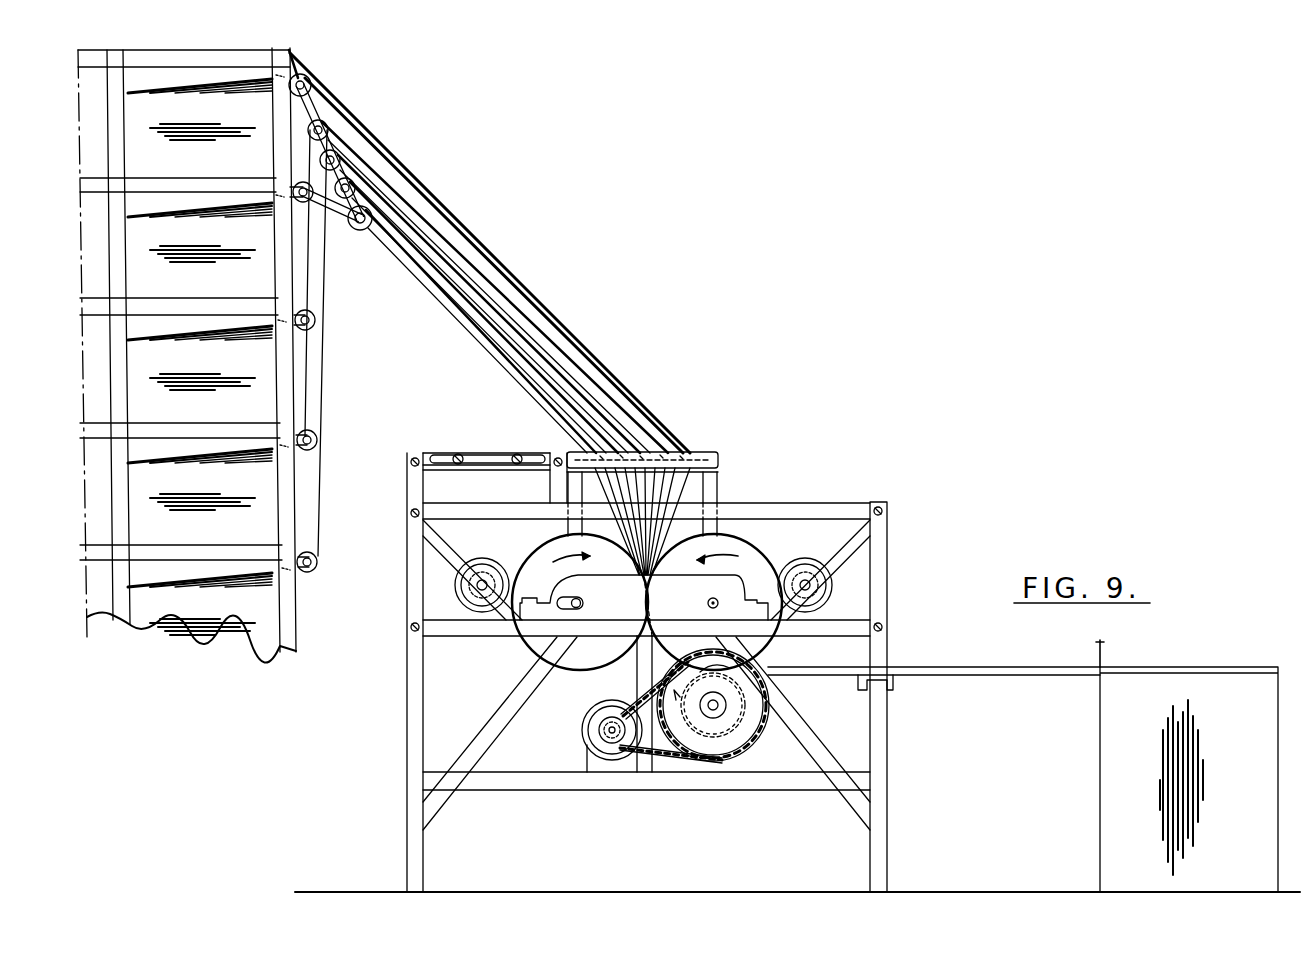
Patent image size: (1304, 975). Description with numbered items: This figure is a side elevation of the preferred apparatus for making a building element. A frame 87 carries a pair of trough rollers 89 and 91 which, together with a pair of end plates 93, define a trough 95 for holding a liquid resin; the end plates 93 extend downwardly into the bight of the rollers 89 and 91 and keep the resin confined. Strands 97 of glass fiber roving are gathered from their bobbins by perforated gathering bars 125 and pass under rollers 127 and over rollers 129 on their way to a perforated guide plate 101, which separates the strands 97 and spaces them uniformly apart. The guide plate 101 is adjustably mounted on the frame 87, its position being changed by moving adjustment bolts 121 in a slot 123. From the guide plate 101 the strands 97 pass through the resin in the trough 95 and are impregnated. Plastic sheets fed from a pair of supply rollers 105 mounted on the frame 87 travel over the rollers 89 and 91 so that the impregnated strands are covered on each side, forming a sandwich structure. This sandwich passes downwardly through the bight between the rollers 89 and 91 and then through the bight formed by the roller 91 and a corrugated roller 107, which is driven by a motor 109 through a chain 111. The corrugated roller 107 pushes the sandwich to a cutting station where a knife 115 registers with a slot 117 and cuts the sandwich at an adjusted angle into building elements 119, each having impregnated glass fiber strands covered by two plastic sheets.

The frame 87 is at (878, 730).
The trough roller 89 is at (579, 660).
The trough roller 91 is at (766, 636).
The end plates 93 is at (697, 498).
The trough 95 is at (688, 492).
The strands 97 is at (490, 238).
The guide plate 101 is at (698, 453).
The supply rollers 105 is at (456, 580).
The corrugated roller 107 is at (779, 690).
The motor 109 is at (584, 727).
The chain 111 is at (705, 757).
The knife 115 is at (1104, 656).
The slot 117 is at (1104, 678).
The building element 119 is at (1216, 667).
The adjustment bolts 121 is at (517, 454).
The slot 123 is at (486, 463).
The perforated gathering bars 125 is at (293, 343).
The rollers 127 is at (358, 286).
The rollers 129 is at (328, 124).